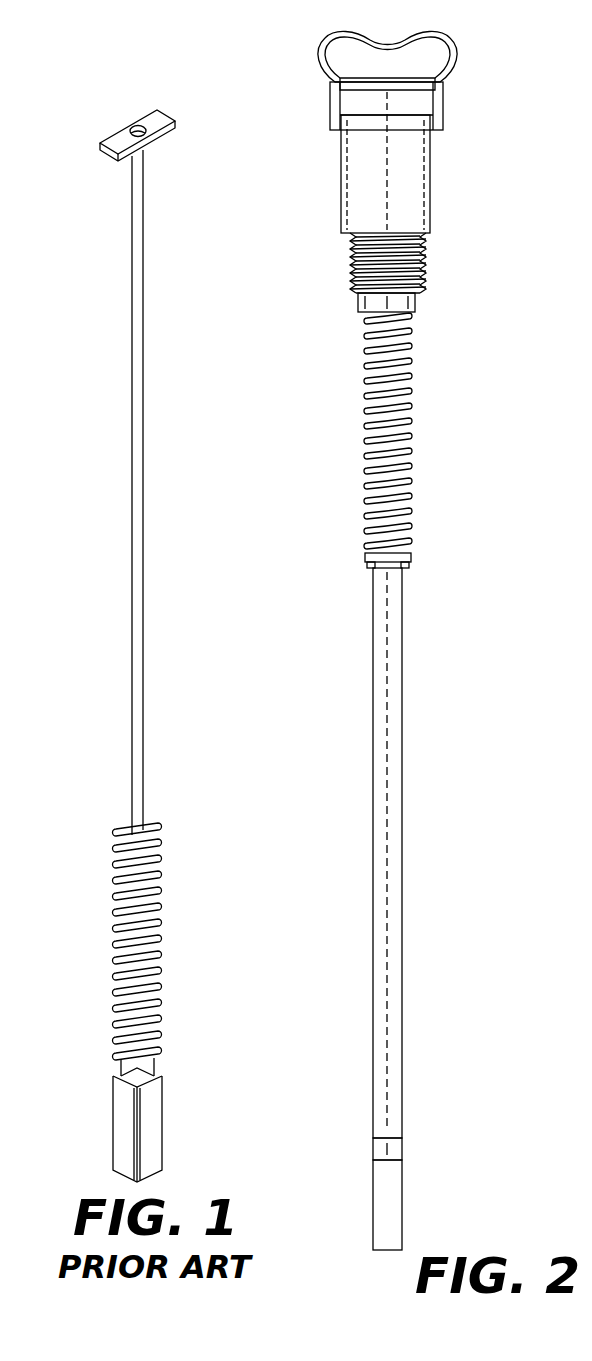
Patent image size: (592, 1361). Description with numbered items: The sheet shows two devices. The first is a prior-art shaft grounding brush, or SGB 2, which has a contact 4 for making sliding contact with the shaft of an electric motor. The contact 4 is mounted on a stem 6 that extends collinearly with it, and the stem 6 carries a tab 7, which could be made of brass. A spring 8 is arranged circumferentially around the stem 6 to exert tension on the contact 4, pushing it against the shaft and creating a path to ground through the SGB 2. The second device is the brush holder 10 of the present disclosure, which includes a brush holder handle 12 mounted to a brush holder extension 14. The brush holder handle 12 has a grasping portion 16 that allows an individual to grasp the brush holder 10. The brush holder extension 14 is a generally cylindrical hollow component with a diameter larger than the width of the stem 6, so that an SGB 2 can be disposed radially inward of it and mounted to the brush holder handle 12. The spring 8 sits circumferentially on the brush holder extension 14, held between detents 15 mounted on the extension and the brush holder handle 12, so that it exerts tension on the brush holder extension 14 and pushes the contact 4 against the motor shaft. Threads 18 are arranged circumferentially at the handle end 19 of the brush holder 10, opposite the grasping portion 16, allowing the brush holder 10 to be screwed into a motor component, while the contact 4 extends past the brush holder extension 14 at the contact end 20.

In FIG. 1, the shaft grounding brush (SGB) 2 is at (98, 410).
In FIG. 1, the contact 4 is at (148, 1145).
In FIG. 2, the contact 4 is at (386, 1235).
In FIG. 1, the stem 6 is at (142, 346).
In FIG. 1, the tab 7 is at (101, 147).
In FIG. 1, the spring 8 is at (153, 946).
In FIG. 2, the spring 8 is at (408, 441).
In FIG. 2, the brush holder 10 is at (302, 76).
In FIG. 2, the brush holder handle 12 is at (431, 183).
In FIG. 2, the brush holder extension 14 is at (401, 790).
In FIG. 2, the detents 15 is at (367, 564).
In FIG. 2, the grasping portion 16 is at (453, 53).
In FIG. 2, the threads 18 is at (430, 273).
In FIG. 2, the handle end 19 is at (337, 181).
In FIG. 2, the contact end 20 is at (443, 1116).